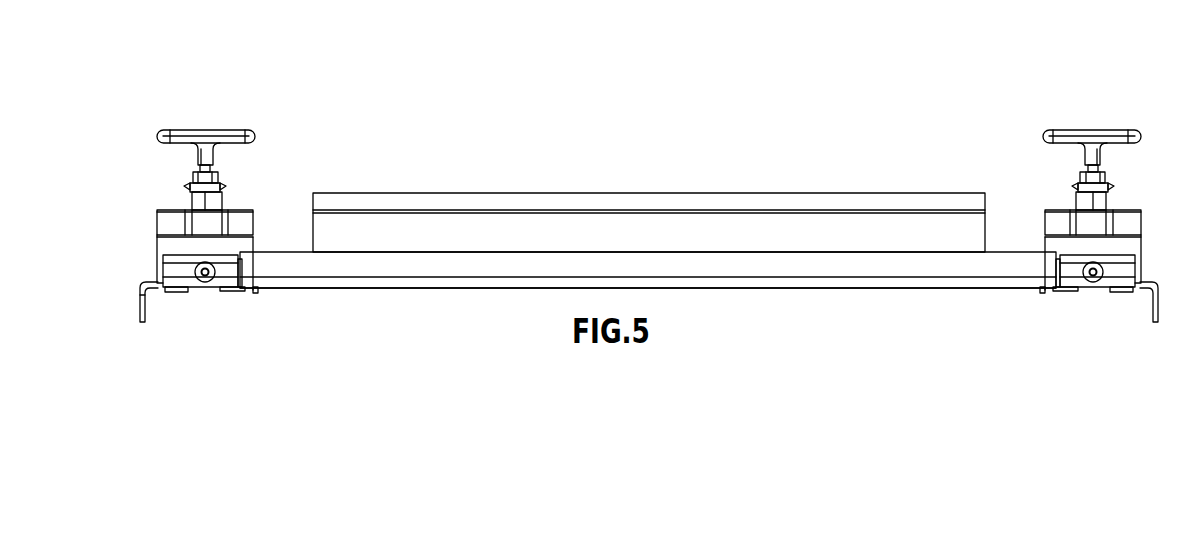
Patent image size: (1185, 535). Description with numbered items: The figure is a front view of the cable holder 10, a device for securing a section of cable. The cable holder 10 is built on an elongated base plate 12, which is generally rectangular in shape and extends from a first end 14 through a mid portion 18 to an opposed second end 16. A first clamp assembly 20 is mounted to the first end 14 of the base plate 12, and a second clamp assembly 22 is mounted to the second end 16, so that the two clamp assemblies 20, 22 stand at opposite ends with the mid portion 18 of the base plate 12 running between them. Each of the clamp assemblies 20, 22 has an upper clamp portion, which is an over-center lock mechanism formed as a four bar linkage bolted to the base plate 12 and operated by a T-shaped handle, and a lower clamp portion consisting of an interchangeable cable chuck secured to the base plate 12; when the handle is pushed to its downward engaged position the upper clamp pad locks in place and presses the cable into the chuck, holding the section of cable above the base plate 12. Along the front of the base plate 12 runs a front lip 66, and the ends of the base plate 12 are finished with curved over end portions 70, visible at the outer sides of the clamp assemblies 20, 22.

The cable holder 10 is at (795, 152).
The base plate 12 is at (619, 276).
The first end 14 is at (145, 322).
The second end 16 is at (1154, 322).
The mid portion 18 is at (453, 288).
The first clamp assembly 20 is at (228, 218).
The second clamp assembly 22 is at (1112, 209).
The front lip 66 is at (772, 265).
The curved over end portions 70 is at (147, 302).